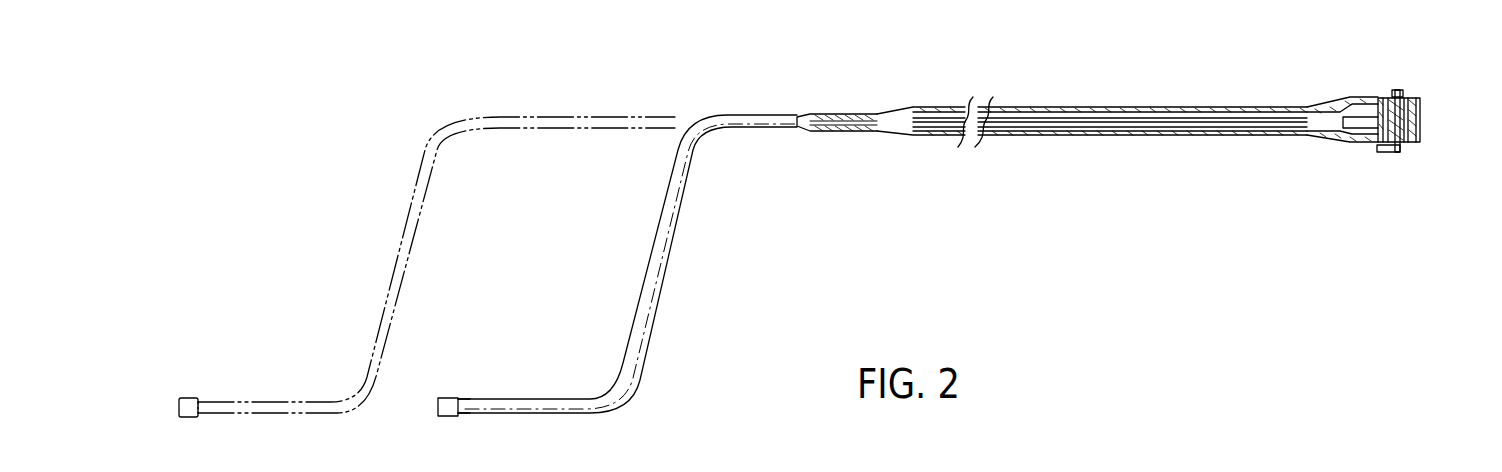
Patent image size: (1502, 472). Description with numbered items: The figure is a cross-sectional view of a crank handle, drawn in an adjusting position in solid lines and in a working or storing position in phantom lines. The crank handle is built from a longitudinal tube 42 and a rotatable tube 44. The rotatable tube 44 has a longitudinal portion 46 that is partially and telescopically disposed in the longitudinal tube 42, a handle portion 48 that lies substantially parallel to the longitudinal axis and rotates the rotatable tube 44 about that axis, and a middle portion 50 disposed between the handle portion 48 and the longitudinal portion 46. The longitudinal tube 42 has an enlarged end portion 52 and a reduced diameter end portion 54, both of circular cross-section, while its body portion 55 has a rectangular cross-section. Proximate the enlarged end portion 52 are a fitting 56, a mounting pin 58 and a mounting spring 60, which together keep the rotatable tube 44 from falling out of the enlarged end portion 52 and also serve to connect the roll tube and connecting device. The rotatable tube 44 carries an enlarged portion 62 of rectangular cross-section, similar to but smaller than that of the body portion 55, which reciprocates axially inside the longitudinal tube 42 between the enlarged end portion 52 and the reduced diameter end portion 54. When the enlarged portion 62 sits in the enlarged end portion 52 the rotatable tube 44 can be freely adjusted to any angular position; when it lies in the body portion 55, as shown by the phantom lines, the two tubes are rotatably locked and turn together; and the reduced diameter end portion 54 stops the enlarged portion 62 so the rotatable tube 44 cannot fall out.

The longitudinal tube 42 is at (1093, 130).
The rotatable tube 44 is at (820, 132).
The longitudinal portion 46 is at (823, 112).
The handle portion 48 is at (513, 400).
The middle portion 50 is at (660, 265).
The enlarged end portion 52 is at (1350, 103).
The reduced diameter end portion 54 is at (887, 110).
The body portion 55 is at (1085, 110).
The fitting 56 is at (1413, 123).
The mounting pin 58 is at (1403, 95).
The mounting spring 60 is at (1387, 152).
The enlarged portion 62 is at (1343, 126).